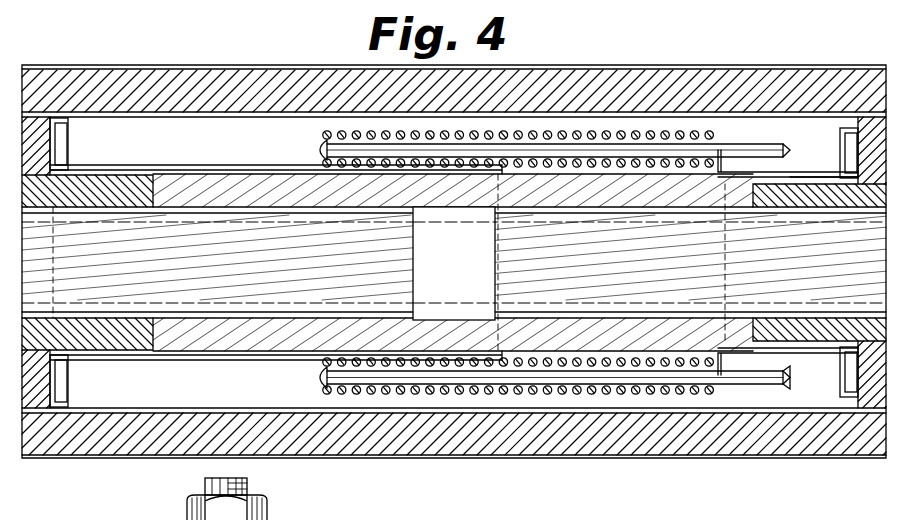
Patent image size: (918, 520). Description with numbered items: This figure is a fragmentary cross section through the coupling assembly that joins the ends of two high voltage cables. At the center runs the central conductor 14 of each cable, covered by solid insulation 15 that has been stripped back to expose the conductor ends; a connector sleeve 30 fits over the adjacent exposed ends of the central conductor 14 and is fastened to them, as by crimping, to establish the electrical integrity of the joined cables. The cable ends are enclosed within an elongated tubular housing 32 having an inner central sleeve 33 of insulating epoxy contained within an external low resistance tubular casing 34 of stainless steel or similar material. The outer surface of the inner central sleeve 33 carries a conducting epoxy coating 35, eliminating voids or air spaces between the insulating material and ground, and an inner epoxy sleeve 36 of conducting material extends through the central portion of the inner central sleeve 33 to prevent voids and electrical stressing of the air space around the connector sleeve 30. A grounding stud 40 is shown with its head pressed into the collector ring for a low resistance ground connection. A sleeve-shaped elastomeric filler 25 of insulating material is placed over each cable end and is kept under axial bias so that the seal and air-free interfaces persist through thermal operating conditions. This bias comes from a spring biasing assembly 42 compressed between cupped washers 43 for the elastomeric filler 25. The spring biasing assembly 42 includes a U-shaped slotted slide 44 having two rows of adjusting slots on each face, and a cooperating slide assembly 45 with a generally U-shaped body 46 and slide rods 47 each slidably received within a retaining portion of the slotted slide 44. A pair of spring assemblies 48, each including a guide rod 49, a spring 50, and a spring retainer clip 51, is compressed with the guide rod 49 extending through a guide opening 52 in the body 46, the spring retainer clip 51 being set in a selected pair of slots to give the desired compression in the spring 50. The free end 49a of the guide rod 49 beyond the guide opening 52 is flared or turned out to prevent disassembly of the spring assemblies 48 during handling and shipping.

The central conductor 14 is at (506, 282).
The solid insulation 15 is at (101, 341).
The elastomeric filler 25 is at (40, 108).
The connector sleeve 30 is at (188, 339).
The tubular housing 32 is at (463, 457).
The inner central sleeve 33 is at (373, 433).
The tubular casing 34 is at (292, 44).
The conducting epoxy coating 35 is at (683, 447).
The inner epoxy sleeve 36 is at (650, 458).
The grounding stud 40 is at (205, 483).
The spring biasing assembly 42 is at (146, 165).
The cupped washer 43 is at (63, 134).
The slotted slide 44 is at (227, 165).
The slide assembly 45 is at (807, 170).
The body 46 is at (798, 371).
The slide rod 47 is at (530, 256).
The spring assembly 48 is at (506, 138).
The guide rod 49 is at (553, 146).
The free end of guide rod 49a is at (790, 145).
The spring 50 is at (597, 134).
The spring retainer clip 51 is at (322, 133).
The guide opening 52 is at (722, 148).